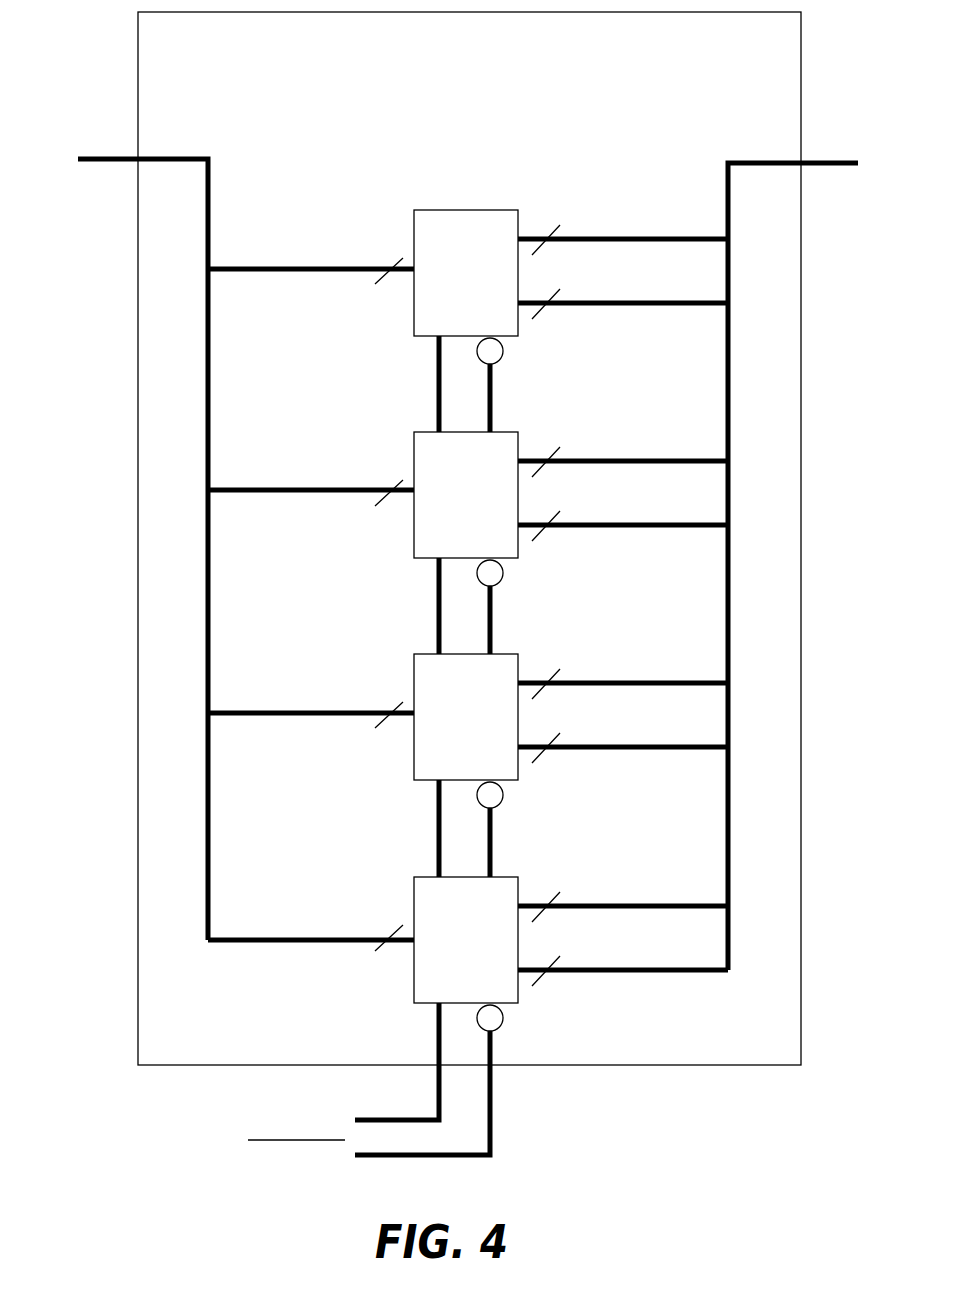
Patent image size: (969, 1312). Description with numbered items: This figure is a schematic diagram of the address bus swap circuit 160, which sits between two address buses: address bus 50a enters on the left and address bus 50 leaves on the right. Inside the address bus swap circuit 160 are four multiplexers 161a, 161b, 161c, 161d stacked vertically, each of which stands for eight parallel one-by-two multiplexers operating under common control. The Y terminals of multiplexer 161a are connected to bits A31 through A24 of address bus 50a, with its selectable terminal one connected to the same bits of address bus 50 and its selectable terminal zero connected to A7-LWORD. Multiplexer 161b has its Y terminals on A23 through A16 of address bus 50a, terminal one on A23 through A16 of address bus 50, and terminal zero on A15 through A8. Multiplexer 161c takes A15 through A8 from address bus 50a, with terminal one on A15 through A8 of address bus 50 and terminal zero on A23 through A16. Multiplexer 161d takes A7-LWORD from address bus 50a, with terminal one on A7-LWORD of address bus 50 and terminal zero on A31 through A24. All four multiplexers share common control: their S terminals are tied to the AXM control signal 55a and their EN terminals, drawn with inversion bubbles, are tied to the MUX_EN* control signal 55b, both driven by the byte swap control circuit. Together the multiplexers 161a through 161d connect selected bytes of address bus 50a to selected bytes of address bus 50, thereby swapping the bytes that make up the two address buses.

The address bus swap circuit 160 is at (469, 538).
The address bus 50a is at (223, 544).
The address bus 50 is at (707, 561).
The multiplexer 161a is at (413, 223).
The multiplexer 161b is at (413, 445).
The multiplexer 161c is at (413, 667).
The multiplexer 161d is at (413, 890).
The AXM control signal 55a is at (368, 735).
The MUX_EN* control signal 55b is at (397, 768).